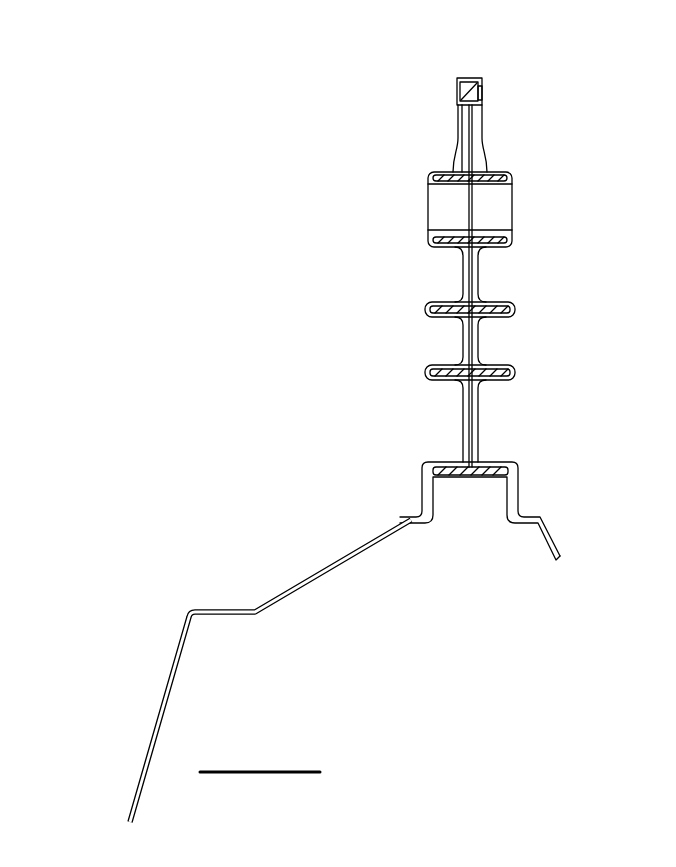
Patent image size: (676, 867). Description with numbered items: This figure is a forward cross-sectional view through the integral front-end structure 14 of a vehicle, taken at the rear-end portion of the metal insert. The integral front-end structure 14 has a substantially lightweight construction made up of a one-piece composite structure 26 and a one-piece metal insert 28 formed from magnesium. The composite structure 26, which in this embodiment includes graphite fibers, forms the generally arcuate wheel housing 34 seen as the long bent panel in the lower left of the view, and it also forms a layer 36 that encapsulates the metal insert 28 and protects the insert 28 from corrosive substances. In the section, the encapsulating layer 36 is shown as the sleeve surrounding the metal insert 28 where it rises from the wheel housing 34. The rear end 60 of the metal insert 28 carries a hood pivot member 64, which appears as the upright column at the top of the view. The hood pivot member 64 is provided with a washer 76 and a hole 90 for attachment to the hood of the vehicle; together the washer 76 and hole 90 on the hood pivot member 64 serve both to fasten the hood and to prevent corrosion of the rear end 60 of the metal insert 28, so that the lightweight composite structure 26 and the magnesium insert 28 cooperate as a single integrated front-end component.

The integral front-end structure 14 is at (238, 194).
The one-piece composite structure 26 is at (311, 570).
The one-piece metal insert 28 is at (455, 482).
The wheel housing 34 is at (350, 550).
The layer 36 is at (428, 176).
The rear end 60 is at (529, 146).
The hood pivot member 64 is at (487, 79).
The washer 76 is at (495, 102).
The hole 90 is at (457, 101).